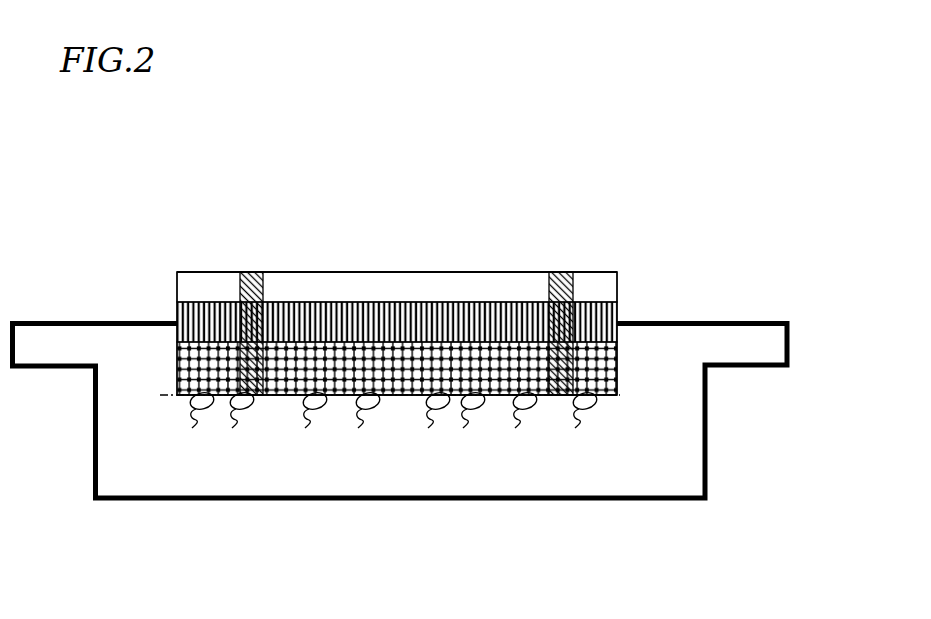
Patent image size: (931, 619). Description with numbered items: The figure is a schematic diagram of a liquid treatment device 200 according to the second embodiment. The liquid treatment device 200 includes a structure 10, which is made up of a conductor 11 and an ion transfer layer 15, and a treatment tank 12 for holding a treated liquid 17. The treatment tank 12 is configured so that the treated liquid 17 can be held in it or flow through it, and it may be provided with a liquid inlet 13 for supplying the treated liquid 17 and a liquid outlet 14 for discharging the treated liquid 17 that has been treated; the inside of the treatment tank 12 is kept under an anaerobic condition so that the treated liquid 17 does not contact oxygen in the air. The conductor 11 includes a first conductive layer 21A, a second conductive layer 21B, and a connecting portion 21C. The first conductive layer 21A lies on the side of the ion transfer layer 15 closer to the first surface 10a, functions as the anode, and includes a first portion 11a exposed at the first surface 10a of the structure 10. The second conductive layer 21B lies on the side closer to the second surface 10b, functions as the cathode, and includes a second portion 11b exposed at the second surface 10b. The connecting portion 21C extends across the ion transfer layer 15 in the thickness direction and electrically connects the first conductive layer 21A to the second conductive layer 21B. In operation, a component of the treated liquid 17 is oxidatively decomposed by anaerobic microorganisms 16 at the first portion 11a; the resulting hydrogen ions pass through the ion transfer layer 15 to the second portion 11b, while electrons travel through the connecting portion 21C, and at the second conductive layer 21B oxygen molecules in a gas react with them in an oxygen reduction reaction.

The liquid treatment device 200 is at (783, 113).
The structure 10 is at (158, 268).
The first surface 10a is at (178, 395).
The second surface 10b is at (218, 272).
The conductor 11 is at (485, 350).
The first portion 11a is at (392, 395).
The second portion 11b is at (427, 272).
The treatment tank 12 is at (577, 498).
The liquid inlet 13 is at (20, 321).
The liquid outlet 14 is at (787, 321).
The ion transfer layer 15 is at (300, 305).
The anaerobic microorganisms 16 is at (325, 407).
The treated liquid 17 is at (652, 475).
The first conductive layer 21A is at (612, 350).
The second conductive layer 21B is at (462, 290).
The connecting portion 21C is at (565, 272).